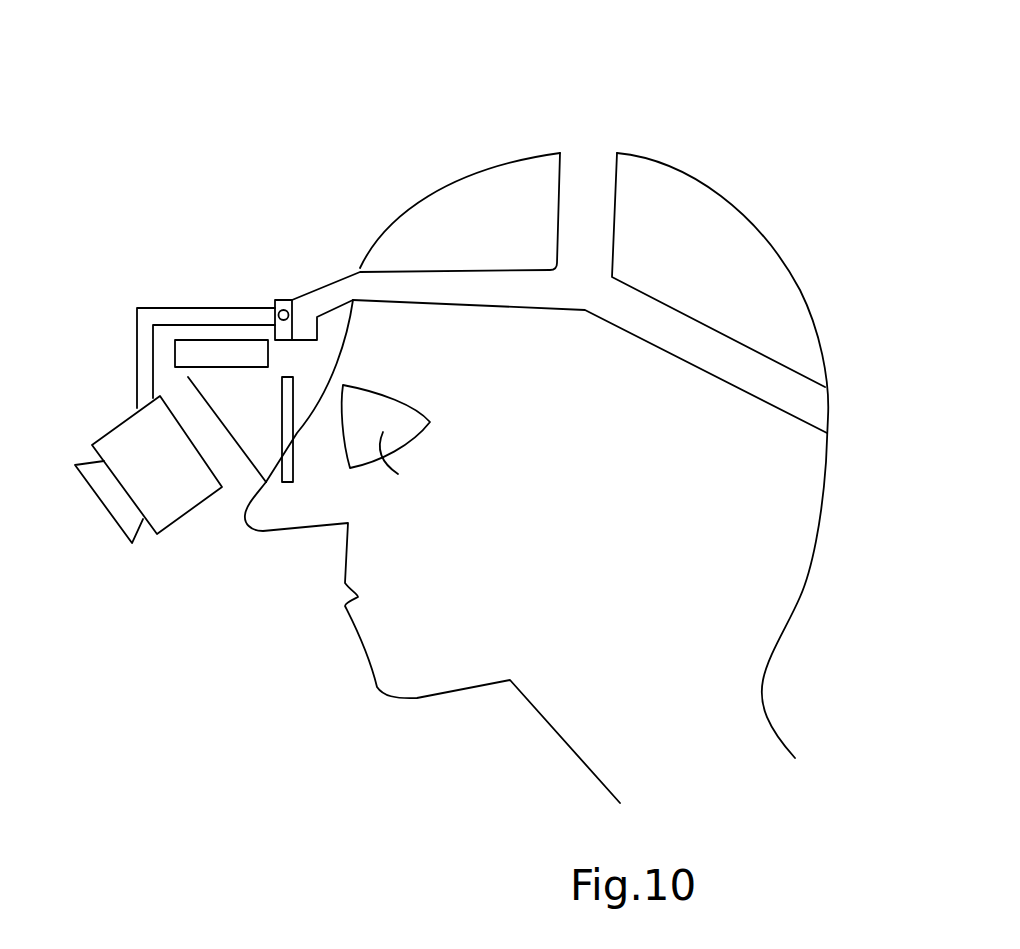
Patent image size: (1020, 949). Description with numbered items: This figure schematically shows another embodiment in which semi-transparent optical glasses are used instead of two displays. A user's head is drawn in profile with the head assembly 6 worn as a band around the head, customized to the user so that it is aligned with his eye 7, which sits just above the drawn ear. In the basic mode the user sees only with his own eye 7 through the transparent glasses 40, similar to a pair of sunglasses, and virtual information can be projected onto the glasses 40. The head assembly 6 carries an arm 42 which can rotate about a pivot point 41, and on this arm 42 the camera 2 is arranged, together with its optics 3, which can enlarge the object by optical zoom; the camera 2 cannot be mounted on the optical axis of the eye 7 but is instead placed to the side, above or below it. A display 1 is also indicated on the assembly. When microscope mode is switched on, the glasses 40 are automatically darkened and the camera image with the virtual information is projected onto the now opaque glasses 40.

The display 1 is at (204, 348).
The camera 2 is at (125, 443).
The optics 3 is at (102, 498).
The head assembly 6 is at (590, 177).
The eye 7 is at (398, 474).
The transparent glasses 40 is at (223, 417).
The pivot point 41 is at (290, 302).
The arm 42 is at (146, 314).